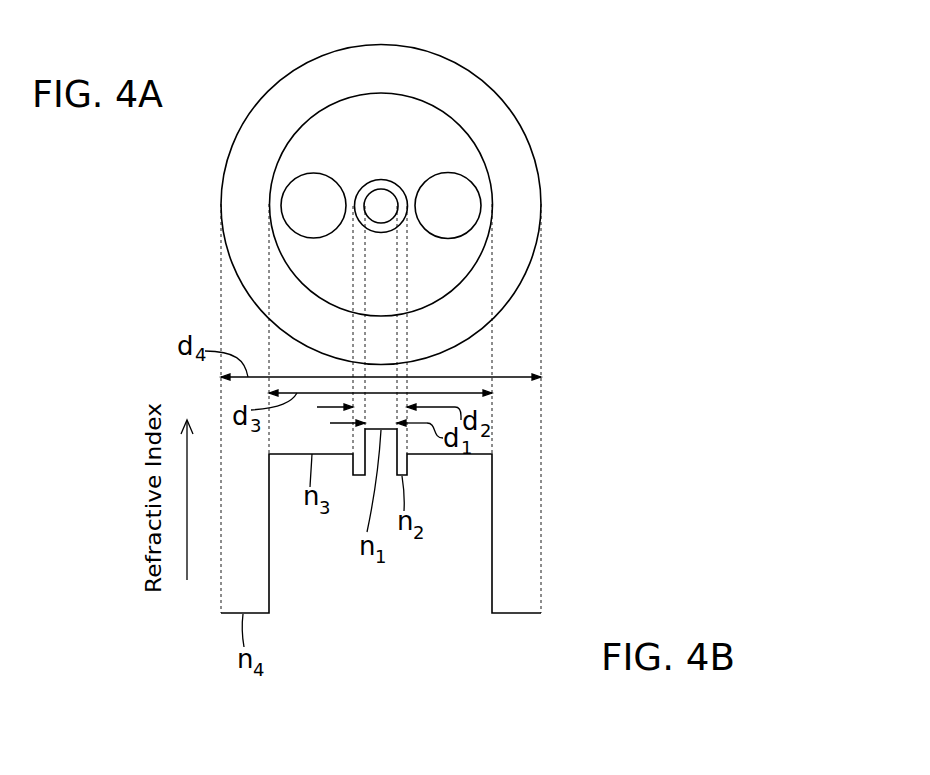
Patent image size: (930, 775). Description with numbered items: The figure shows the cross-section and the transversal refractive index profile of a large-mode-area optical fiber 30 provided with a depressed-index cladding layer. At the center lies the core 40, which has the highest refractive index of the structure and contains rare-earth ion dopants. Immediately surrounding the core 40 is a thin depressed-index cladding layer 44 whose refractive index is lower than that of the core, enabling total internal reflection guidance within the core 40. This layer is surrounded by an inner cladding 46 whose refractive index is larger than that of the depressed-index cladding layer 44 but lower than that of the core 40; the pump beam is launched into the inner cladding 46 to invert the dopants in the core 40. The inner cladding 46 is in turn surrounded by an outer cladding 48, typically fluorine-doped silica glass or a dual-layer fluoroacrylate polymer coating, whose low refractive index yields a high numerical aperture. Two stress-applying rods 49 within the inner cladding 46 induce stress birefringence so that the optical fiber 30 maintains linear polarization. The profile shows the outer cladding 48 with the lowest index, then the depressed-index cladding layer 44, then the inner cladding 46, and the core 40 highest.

The LMA optical fiber 30 is at (397, 182).
The core 40 is at (380, 179).
The depressed-index cladding layer 44 is at (402, 175).
The inner cladding 46 is at (491, 150).
The outer cladding 48 is at (549, 205).
The stress-applying rods 49 is at (439, 247).